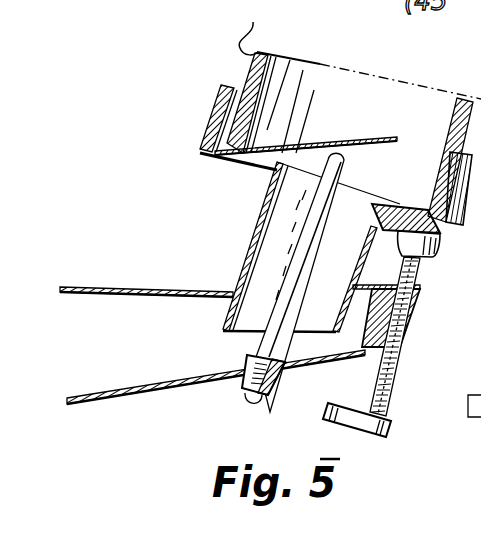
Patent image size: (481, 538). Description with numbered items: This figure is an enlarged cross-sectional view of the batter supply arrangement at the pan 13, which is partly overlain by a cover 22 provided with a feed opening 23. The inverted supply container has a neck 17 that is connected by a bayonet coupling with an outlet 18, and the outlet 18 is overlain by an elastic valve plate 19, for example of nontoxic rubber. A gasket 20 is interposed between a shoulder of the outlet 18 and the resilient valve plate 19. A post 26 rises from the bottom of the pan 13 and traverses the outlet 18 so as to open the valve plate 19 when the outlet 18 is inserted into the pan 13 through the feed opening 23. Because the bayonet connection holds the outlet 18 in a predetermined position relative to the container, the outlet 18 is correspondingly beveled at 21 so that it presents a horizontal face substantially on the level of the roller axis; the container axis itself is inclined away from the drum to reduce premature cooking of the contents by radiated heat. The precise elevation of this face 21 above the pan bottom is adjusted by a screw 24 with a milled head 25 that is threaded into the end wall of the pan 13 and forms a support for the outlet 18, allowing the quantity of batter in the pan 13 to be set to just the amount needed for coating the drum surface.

The pan 13 is at (140, 396).
The neck 17 is at (255, 24).
The outlet 18 is at (222, 103).
The elastic valve plate 19 is at (323, 148).
The gasket 20 is at (405, 205).
The bevel 21 is at (238, 342).
The cover 22 is at (120, 289).
The feed opening 23 is at (238, 282).
The screw 24 is at (386, 370).
The milled head 25 is at (383, 414).
The post 26 is at (300, 240).